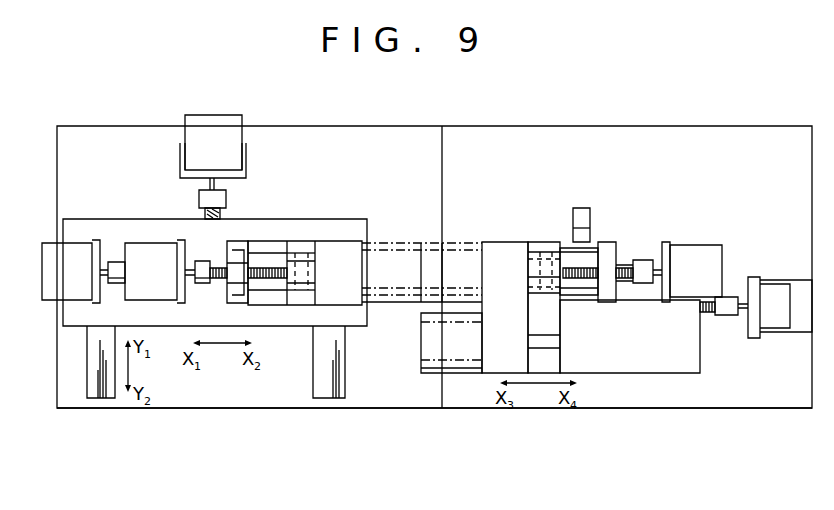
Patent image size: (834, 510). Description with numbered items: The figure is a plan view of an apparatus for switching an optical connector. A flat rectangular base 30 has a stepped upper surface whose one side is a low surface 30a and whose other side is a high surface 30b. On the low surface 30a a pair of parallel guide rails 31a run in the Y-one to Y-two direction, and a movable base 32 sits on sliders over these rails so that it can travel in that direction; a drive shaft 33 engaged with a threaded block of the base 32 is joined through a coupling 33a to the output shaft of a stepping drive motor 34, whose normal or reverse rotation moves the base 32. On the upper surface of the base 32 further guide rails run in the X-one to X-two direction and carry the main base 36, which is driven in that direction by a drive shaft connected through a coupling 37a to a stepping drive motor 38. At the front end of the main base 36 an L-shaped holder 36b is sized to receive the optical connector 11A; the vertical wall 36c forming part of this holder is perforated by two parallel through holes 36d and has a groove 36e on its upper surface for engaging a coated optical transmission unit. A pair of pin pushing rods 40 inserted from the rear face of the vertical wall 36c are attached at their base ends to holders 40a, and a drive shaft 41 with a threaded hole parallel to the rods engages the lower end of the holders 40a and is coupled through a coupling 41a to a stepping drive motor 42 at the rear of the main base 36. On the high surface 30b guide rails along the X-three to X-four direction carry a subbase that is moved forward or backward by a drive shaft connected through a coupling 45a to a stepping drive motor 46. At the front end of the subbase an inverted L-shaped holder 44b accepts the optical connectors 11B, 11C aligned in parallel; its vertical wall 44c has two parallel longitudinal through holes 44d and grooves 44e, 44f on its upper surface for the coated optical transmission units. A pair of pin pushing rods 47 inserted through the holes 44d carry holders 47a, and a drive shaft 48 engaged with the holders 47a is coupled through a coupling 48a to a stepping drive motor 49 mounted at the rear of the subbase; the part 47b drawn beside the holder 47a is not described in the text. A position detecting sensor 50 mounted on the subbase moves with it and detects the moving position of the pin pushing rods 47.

The base 30 is at (640, 408).
The low surface 30a is at (227, 408).
The high surface 30b is at (745, 408).
The guide rails 31a is at (100, 398).
The movable base 32 is at (298, 219).
The drive shaft 33 is at (206, 214).
The coupling 33a is at (200, 200).
The drive motor 34 is at (233, 122).
The main base 36 is at (313, 241).
The L-shaped holder 36b is at (330, 243).
The vertical wall 36c is at (313, 261).
The through holes 36d is at (308, 305).
The groove 36e is at (313, 271).
The coupling 37a is at (118, 283).
The drive motor 38 is at (50, 300).
The pin pushing rods 40 is at (262, 250).
The holders 40a is at (252, 250).
The drive shaft 41 is at (219, 283).
The coupling 41a is at (203, 283).
The drive motor 42 is at (148, 262).
The optical connector 11A is at (418, 242).
The optical connector 11B is at (447, 242).
The optical connector 11C is at (421, 376).
The inverted L-shaped holder 44b is at (232, 262).
The vertical wall 44c is at (550, 298).
The through holes 44d is at (557, 255).
The groove 44e is at (538, 262).
The groove 44f is at (533, 340).
The pin pushing rods 47 is at (566, 250).
The holders 47a is at (608, 260).
The shaft 47b is at (620, 245).
The drive shaft 48 is at (625, 266).
The coupling 48a is at (645, 283).
The drive motor 49 is at (712, 245).
The position detecting sensor 50 is at (580, 208).
The coupling 45a is at (727, 315).
The drive motor 46 is at (795, 280).